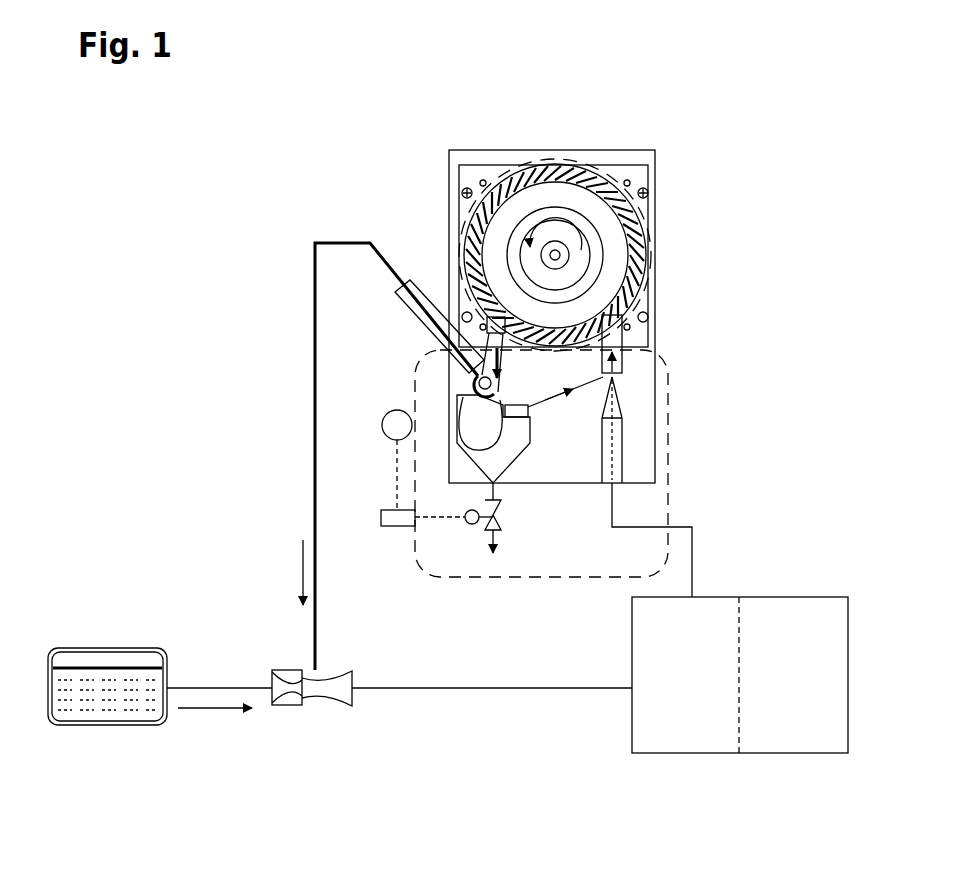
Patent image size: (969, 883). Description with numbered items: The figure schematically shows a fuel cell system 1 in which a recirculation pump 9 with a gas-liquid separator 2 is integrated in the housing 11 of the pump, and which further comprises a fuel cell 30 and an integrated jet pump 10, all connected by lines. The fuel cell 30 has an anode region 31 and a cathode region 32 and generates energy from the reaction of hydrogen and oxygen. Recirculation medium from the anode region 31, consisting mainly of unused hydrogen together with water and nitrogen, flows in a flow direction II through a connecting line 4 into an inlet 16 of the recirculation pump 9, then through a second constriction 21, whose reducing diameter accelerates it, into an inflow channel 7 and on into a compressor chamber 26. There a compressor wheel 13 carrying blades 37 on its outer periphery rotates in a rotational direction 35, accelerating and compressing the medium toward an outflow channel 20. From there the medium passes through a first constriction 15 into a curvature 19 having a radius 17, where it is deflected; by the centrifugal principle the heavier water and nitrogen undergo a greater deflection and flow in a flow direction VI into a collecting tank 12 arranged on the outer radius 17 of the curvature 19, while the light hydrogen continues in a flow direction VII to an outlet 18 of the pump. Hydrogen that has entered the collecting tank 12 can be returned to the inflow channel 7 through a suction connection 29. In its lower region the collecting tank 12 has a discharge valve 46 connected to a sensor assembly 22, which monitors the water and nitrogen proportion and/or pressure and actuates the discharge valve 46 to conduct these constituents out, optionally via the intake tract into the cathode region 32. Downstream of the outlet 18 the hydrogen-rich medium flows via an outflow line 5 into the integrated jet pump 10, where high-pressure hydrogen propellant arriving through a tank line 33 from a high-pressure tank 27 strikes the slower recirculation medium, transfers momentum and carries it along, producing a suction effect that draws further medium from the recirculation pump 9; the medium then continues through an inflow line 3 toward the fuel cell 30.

The fuel cell system 1 is at (265, 158).
The gas-liquid separator 2 is at (680, 392).
The inflow line 3 is at (443, 690).
The connecting line 4 is at (692, 565).
The outflow line 5 is at (315, 262).
The inflow channel 7 is at (612, 325).
The recirculation pump 9 is at (637, 155).
The integrated jet pump 10 is at (288, 705).
The housing 11 is at (637, 365).
The collecting tank 12 is at (470, 417).
The compressor wheel 13 is at (522, 183).
The first constriction 15 is at (455, 352).
The inlet 16 is at (617, 477).
The radius 17 is at (533, 417).
The outlet 18 is at (408, 298).
The curvature 19 is at (462, 387).
The outflow channel 20 is at (440, 300).
The second constriction 21 is at (628, 403).
The sensor assembly 22 is at (500, 430).
The compressor chamber 26 is at (657, 213).
The high-pressure tank 27 is at (72, 727).
The suction connection 29 is at (567, 393).
The fuel cell 30 is at (812, 580).
The anode region 31 is at (685, 742).
The cathode region 32 is at (797, 742).
The tank line 33 is at (205, 688).
The rotational direction 35 is at (557, 230).
The blades 37 is at (643, 240).
The discharge valve 46 is at (477, 527).
The flow direction II is at (622, 432).
The flow direction VI is at (512, 400).
The flow direction VII is at (468, 362).